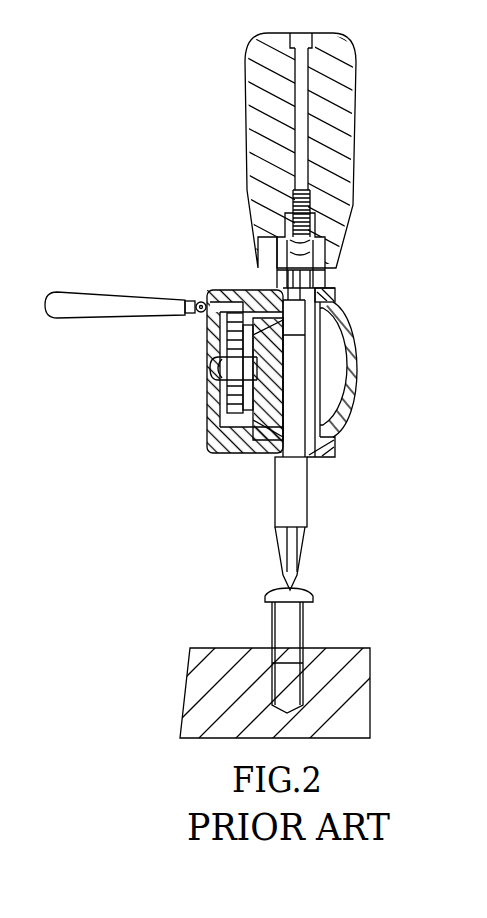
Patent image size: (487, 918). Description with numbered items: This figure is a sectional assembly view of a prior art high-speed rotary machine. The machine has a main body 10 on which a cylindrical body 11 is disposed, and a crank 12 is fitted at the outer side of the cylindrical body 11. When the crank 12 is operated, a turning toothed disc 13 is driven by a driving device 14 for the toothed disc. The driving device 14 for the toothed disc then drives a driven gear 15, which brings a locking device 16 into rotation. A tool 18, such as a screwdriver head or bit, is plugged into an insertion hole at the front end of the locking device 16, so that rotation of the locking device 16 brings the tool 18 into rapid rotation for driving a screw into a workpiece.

The main body 10 is at (356, 170).
The cylindrical body 11 is at (236, 290).
The crank 12 is at (86, 320).
The turning toothed disc 13 is at (208, 430).
The driving device for the toothed disc 14 is at (262, 432).
The driven gear 15 is at (272, 432).
The locking device 16 is at (300, 507).
The tool 18 is at (300, 572).